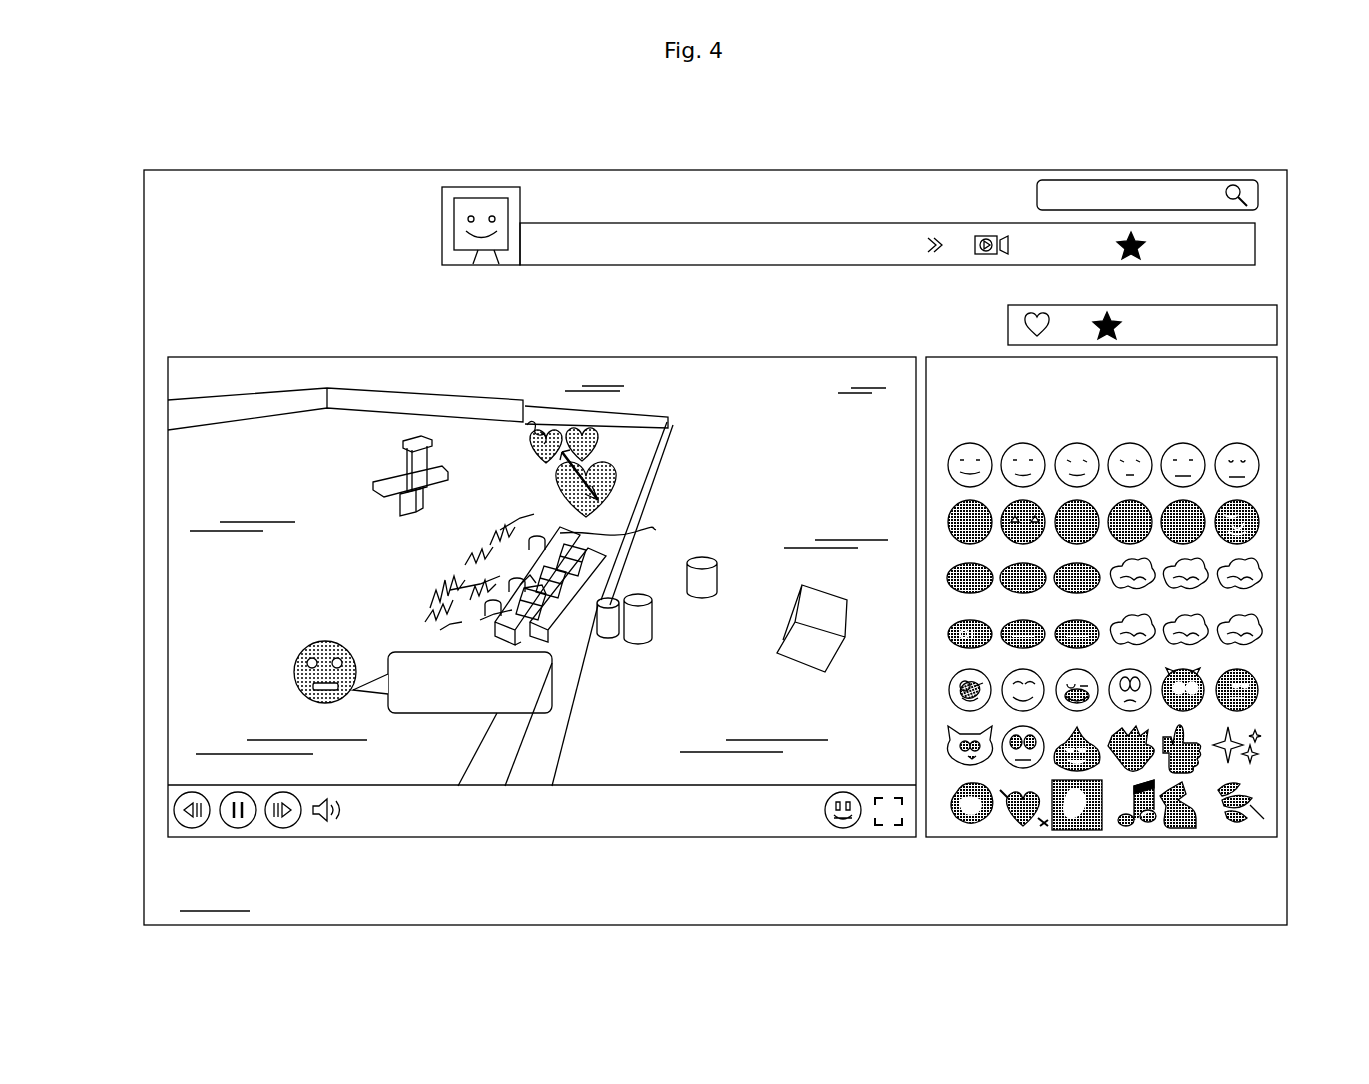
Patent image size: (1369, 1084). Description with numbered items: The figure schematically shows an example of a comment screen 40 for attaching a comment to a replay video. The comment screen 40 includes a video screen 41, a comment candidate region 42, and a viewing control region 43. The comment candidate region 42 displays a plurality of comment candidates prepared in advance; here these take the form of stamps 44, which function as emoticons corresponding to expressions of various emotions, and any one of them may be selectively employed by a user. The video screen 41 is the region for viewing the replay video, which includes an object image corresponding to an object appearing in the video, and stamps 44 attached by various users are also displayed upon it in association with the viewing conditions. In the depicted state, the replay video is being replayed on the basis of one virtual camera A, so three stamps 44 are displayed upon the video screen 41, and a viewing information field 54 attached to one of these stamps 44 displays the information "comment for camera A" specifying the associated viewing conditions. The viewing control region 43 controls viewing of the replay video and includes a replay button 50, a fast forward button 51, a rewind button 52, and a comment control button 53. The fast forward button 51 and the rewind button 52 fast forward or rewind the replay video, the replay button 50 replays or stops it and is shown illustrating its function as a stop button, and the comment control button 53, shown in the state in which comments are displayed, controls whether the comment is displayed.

The comment screen 40 is at (144, 276).
The video screen 41 is at (168, 440).
The comment candidate region 42 is at (1287, 383).
The viewing control region 43 is at (662, 838).
The stamp 44 is at (551, 490).
The replay button 50 is at (231, 828).
The fast forward button 51 is at (286, 829).
The rewind button 52 is at (175, 817).
The comment control button 53 is at (842, 829).
The viewing information field 54 is at (405, 714).